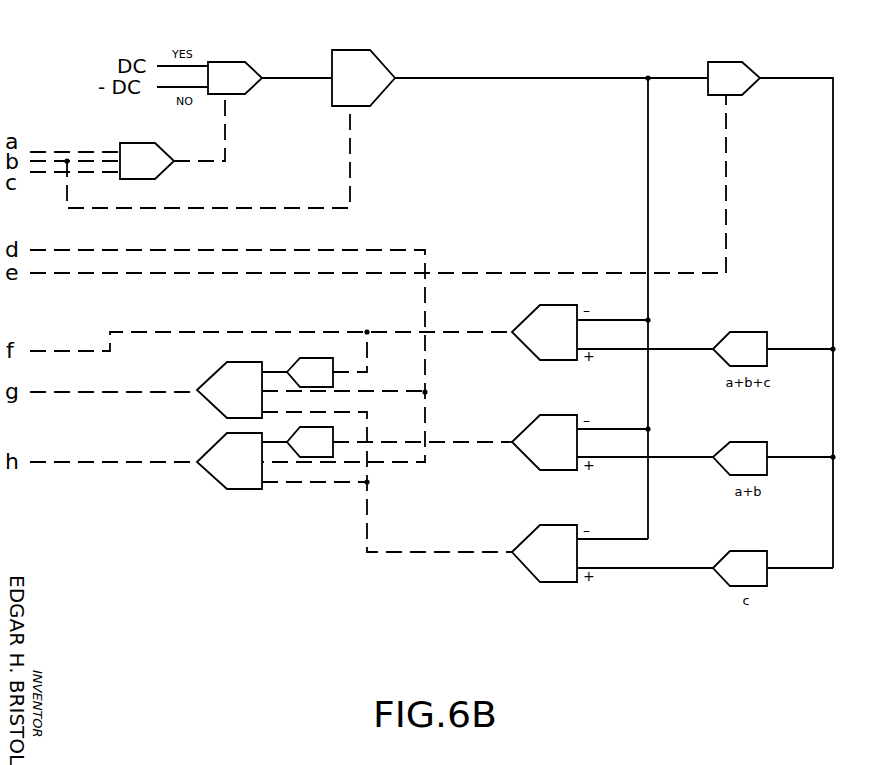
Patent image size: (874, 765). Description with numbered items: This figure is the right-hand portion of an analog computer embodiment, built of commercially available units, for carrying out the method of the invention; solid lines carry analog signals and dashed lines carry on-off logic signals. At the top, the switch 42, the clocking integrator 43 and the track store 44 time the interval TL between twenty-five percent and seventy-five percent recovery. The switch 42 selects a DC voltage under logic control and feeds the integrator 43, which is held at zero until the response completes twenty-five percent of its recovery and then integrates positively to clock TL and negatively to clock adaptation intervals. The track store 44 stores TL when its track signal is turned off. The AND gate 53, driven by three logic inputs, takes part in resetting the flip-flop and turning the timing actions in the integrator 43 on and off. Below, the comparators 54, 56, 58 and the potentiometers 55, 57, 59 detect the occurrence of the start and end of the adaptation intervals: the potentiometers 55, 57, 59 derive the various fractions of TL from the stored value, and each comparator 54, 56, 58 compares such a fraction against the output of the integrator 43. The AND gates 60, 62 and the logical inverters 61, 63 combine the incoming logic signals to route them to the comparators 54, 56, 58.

The switch 42 is at (233, 62).
The clocking integrator 43 is at (368, 51).
The track store 44 is at (733, 62).
The AND gate 53 is at (126, 143).
The comparator 54 is at (528, 317).
The potentiometer 55 is at (752, 332).
The comparator 56 is at (528, 427).
The potentiometer 57 is at (752, 442).
The comparator 58 is at (528, 538).
The potentiometer 59 is at (752, 551).
The AND gate 60 is at (230, 362).
The logical inverter 61 is at (313, 358).
The AND gate 62 is at (220, 436).
The logical inverter 63 is at (322, 458).